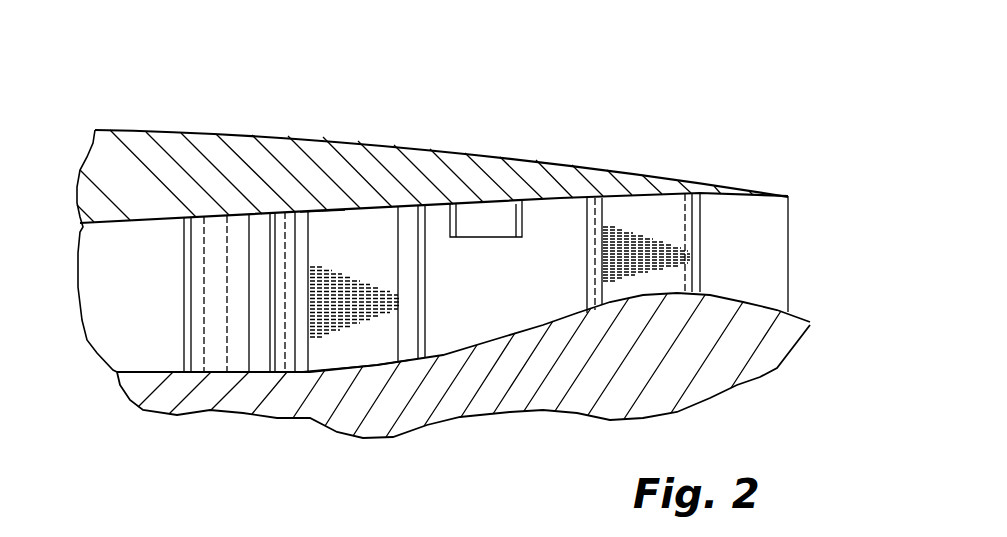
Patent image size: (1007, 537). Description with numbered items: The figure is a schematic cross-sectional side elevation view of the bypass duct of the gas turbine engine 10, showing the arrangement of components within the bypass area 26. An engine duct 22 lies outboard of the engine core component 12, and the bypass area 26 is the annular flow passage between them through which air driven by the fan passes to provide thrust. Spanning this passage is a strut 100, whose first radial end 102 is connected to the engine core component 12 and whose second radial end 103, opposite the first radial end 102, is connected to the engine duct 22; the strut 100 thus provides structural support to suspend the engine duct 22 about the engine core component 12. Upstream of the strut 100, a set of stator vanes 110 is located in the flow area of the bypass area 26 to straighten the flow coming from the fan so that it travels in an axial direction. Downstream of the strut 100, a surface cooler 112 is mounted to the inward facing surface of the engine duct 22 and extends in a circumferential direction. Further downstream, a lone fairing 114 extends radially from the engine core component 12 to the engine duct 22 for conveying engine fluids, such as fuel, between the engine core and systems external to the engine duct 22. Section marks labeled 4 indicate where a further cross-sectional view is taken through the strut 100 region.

The gas turbine engine 10 is at (582, 149).
The engine duct 22 is at (110, 153).
The bypass area 26 is at (122, 266).
The engine core component 12 is at (145, 372).
The first radial end 102 is at (344, 360).
The stator vanes 110 is at (213, 247).
The strut 100 is at (361, 258).
The second radial end 103 is at (323, 212).
The section line 4 is at (282, 257).
The surface cooler 112 is at (481, 224).
The fairing 114 is at (637, 210).